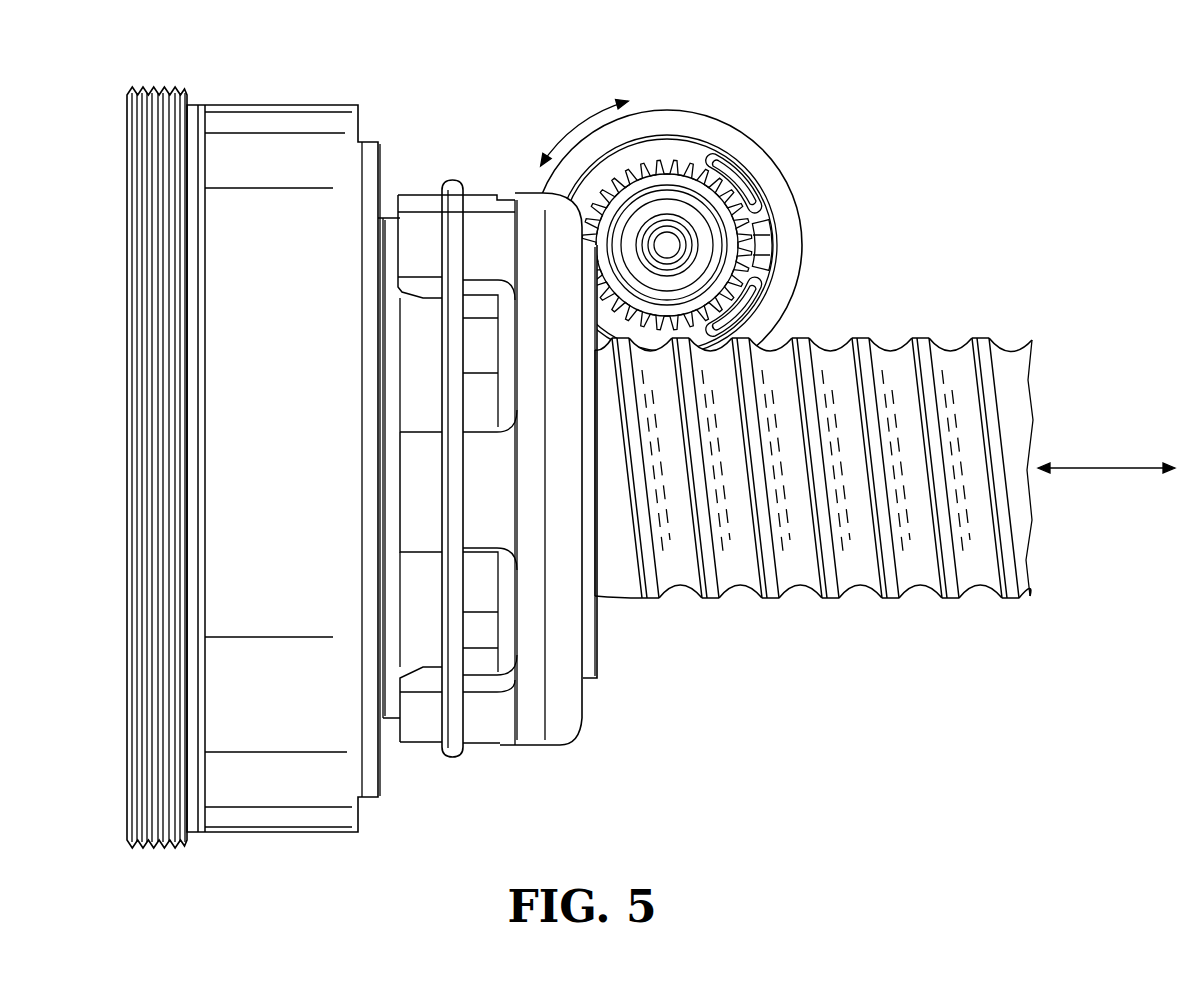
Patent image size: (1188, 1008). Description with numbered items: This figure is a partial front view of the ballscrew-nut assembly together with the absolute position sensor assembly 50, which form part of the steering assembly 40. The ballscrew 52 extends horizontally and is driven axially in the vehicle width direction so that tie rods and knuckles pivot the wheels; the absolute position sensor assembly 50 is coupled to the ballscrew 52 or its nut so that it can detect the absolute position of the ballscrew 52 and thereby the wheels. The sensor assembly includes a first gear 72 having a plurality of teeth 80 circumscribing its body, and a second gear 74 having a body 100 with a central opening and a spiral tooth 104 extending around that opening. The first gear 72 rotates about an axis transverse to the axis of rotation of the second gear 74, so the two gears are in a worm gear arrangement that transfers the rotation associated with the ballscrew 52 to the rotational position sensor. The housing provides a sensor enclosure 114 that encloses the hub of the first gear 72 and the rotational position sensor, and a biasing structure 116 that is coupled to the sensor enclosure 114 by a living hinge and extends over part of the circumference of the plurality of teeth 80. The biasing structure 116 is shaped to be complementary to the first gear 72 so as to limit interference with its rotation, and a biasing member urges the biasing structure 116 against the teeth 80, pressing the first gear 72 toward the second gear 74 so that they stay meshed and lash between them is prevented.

The steering assembly 40 is at (471, 77).
The absolute position sensor assembly 50 is at (704, 203).
The ballscrew 52 is at (990, 350).
The first gear 72 is at (745, 191).
The second gear 74 is at (481, 186).
The plurality of teeth 80 is at (763, 277).
The body 100 is at (583, 720).
The spiral tooth 104 is at (597, 650).
The sensor enclosure 114 is at (744, 136).
The biasing structure 116 is at (761, 241).